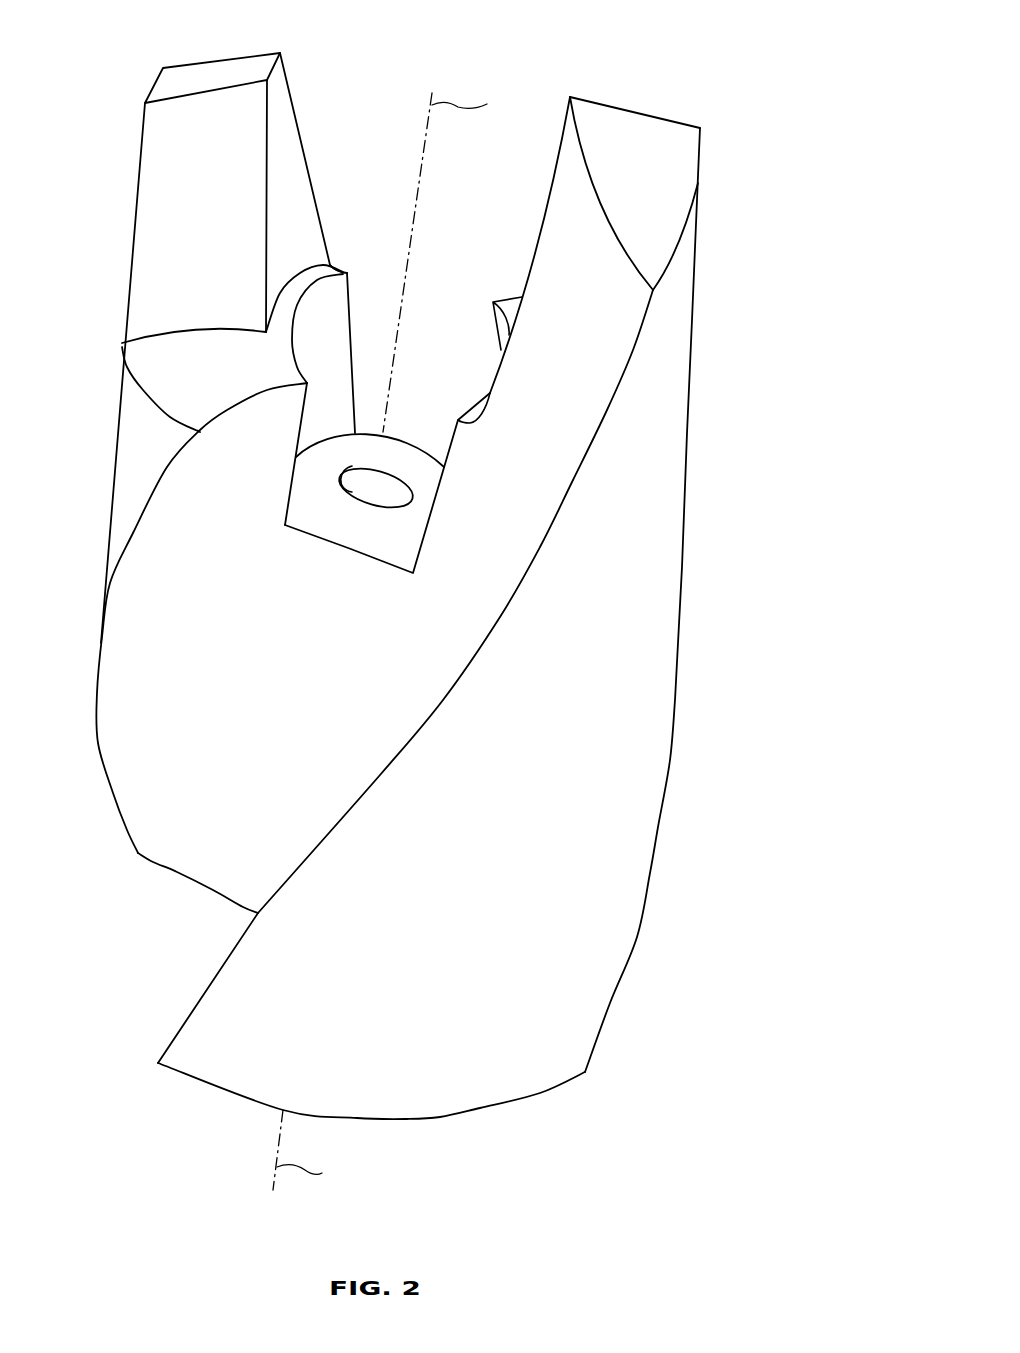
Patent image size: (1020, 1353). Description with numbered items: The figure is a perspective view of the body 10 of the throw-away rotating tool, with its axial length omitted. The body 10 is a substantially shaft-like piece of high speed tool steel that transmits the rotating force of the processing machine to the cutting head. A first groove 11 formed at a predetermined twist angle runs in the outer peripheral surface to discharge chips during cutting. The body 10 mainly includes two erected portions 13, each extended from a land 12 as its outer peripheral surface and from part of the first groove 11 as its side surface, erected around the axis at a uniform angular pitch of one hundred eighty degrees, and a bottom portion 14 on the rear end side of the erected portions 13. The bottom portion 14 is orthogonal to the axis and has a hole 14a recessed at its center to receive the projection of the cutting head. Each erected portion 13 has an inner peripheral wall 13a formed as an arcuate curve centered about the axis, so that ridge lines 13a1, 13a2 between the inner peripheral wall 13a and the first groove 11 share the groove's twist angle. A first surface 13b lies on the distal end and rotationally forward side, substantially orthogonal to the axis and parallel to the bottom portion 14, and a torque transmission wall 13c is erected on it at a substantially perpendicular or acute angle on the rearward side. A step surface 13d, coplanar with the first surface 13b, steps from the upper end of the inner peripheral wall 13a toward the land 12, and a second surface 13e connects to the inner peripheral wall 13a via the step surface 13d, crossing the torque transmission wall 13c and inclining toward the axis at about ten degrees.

The body 10 is at (743, 100).
The first groove 11 is at (140, 804).
The land 12 is at (122, 455).
The erected portions 13 is at (133, 172).
The inner peripheral walls 13a is at (334, 393).
The ridge line 13a1 is at (286, 490).
The ridge line 13a2 is at (350, 317).
The first surface 13b is at (220, 412).
The torque transmission wall 13c is at (137, 277).
The step surface 13d is at (332, 273).
The second surface 13e is at (295, 178).
The bottom portion 14 is at (370, 537).
The hole 14a is at (380, 458).